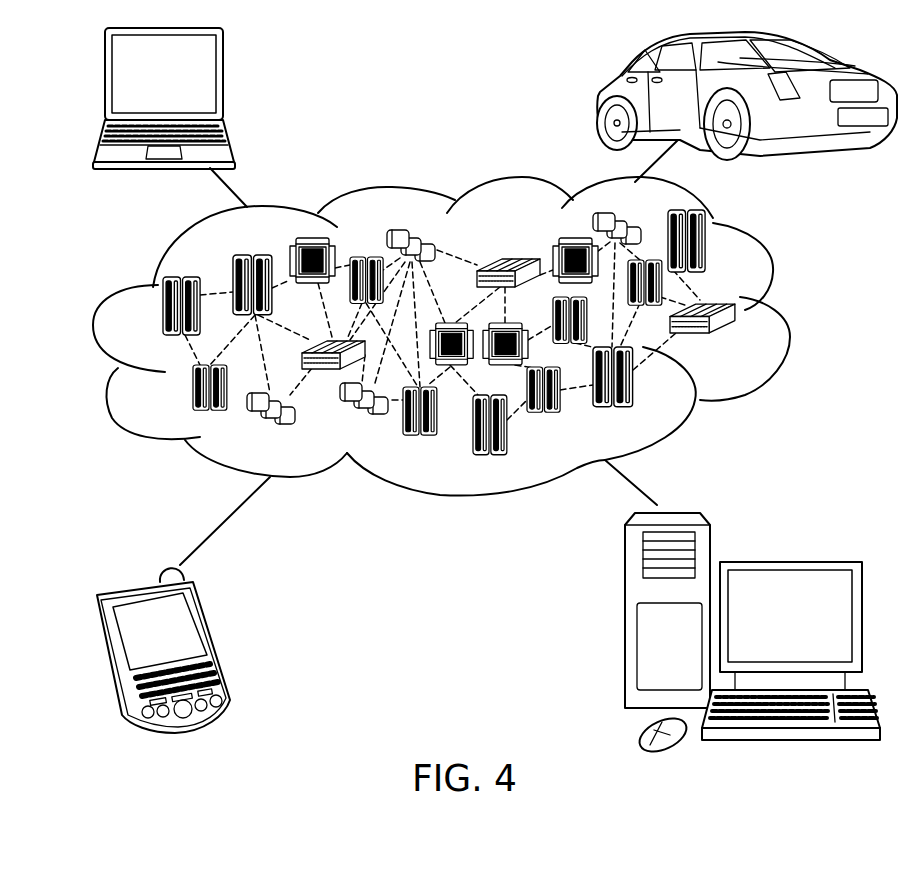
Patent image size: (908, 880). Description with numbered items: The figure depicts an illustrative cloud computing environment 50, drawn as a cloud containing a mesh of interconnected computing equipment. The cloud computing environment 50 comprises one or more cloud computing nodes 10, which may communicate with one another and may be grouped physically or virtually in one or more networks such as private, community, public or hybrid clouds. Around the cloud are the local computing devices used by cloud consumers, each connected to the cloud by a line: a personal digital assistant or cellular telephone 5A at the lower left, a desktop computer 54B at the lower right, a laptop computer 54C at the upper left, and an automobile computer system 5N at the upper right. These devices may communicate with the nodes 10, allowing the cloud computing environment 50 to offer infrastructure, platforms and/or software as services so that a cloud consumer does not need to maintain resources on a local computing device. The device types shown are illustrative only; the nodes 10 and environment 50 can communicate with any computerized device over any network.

The cloud computing environment 50 is at (790, 317).
The cloud computing nodes 10 is at (749, 343).
The laptop computer 54C is at (224, 76).
The automobile computer system 5N is at (601, 92).
The personal digital assistant (PDA) or cellular telephone 5A is at (212, 642).
The desktop computer 54B is at (786, 562).